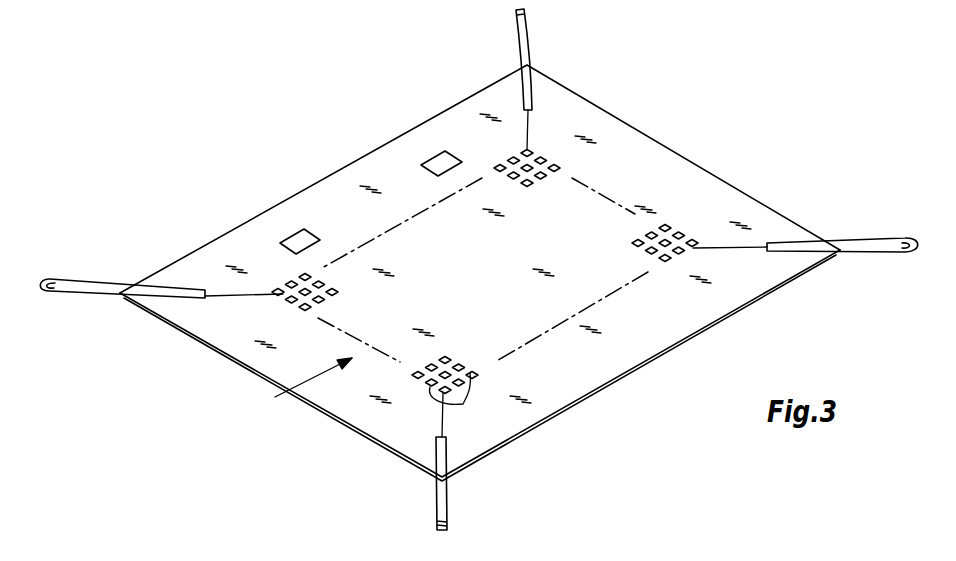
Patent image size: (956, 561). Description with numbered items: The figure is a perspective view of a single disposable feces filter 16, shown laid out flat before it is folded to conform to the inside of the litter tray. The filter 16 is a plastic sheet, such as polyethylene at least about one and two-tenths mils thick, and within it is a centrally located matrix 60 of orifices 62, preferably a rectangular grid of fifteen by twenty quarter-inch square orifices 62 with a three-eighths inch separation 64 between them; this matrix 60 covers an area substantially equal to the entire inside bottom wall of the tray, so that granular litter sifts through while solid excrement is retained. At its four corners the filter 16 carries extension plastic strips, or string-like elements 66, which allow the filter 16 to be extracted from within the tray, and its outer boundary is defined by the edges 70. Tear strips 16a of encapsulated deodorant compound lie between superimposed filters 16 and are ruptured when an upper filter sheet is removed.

The disposable feces filter 16 is at (480, 279).
The tear strips 16a is at (432, 162).
The matrix of orifices 60 is at (275, 397).
The orifices 62 is at (463, 404).
The separation 64 is at (410, 373).
The string-like elements 66 is at (531, 62).
The edges 70 is at (623, 382).